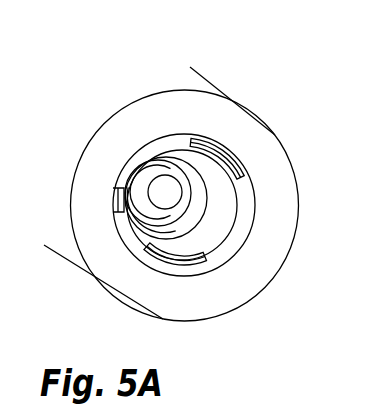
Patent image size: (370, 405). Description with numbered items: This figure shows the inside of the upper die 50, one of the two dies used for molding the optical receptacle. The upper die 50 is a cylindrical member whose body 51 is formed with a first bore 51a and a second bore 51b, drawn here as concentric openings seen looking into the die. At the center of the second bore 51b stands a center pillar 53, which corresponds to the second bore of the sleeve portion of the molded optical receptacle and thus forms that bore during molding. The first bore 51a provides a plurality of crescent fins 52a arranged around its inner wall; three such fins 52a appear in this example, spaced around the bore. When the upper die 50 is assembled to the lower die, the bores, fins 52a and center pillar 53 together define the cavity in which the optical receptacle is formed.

The upper die 50 is at (250, 83).
The body 51 is at (134, 134).
The first bore 51a is at (237, 233).
The second bore 51b is at (196, 194).
The crescent fins 52a is at (192, 134).
The center pillar 53 is at (165, 192).